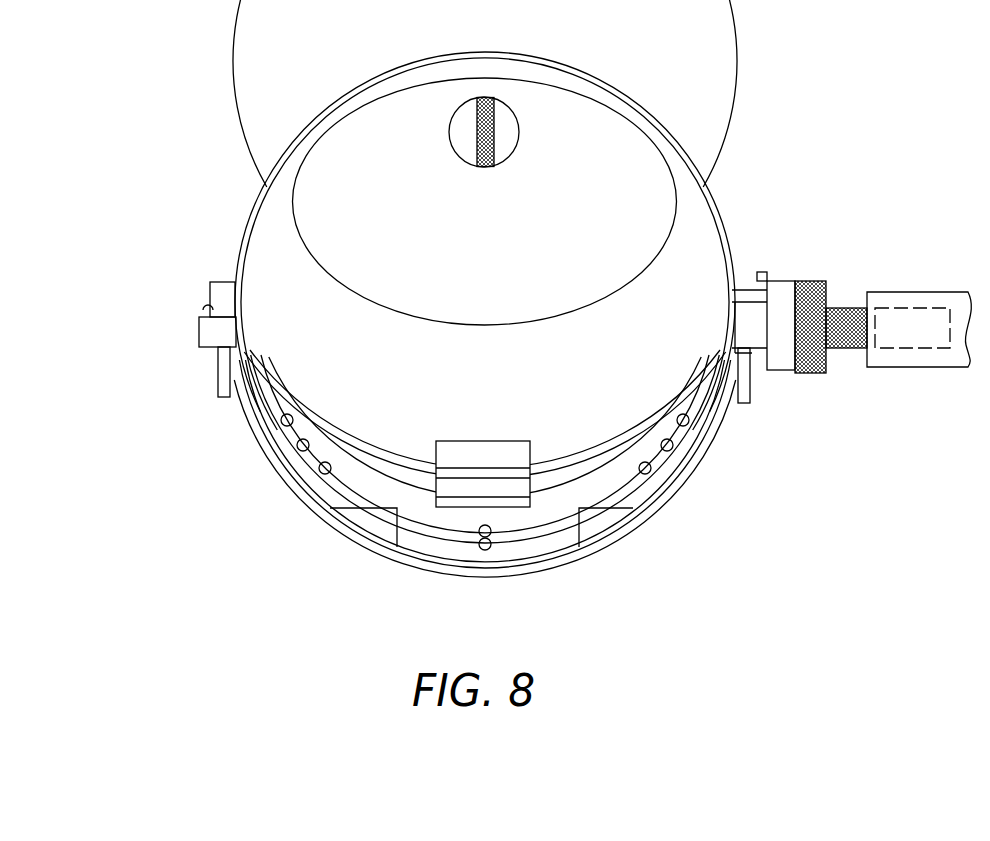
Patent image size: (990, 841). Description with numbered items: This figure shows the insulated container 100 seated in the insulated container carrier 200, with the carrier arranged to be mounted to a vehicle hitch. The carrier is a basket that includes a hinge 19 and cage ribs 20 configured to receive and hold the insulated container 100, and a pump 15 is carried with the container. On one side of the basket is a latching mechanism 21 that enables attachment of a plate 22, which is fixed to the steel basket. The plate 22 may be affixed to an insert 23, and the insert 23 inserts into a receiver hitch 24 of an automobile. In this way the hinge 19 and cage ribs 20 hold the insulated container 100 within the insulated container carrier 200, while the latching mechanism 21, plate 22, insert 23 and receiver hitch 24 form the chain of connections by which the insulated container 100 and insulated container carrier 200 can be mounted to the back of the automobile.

The insulated container carrier 200 is at (690, 116).
The insulated container 100 is at (684, 264).
The pump 15 is at (272, 162).
The hinge 19 is at (208, 307).
The cage ribs 20 is at (647, 435).
The latching mechanism 21 is at (782, 281).
The plate 22 is at (812, 281).
The insert 23 is at (846, 348).
The receiver hitch 24 is at (935, 367).